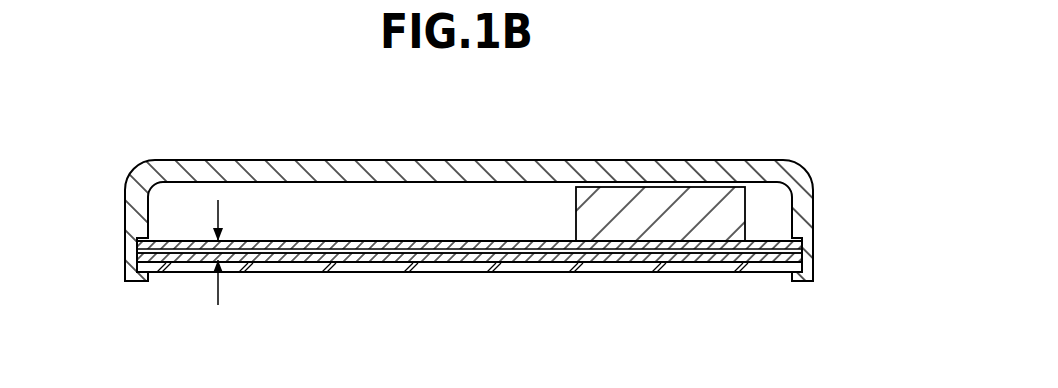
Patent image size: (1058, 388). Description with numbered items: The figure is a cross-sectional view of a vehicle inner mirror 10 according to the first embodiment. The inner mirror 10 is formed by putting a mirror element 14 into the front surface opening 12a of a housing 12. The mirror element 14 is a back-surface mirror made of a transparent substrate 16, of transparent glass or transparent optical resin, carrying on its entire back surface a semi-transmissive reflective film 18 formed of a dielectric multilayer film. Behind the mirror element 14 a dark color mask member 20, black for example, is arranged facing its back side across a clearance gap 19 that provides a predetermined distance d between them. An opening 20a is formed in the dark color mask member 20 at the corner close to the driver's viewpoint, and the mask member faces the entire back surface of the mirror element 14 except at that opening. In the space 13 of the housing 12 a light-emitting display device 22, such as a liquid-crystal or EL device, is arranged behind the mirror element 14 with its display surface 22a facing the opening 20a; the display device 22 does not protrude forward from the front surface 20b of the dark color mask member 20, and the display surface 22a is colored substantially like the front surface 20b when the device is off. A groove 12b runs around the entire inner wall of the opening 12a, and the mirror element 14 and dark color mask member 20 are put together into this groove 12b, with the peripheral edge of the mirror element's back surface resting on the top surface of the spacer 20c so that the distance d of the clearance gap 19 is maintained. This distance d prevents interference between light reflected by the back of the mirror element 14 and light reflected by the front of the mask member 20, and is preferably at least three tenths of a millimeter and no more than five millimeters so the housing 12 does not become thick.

The inner mirror 10 is at (738, 88).
The housing 12 is at (423, 160).
The front surface opening 12a is at (786, 279).
The groove 12b is at (137, 238).
The space 13 is at (515, 203).
The mirror element 14 is at (386, 287).
The transparent substrate 16 is at (342, 266).
The semi-transmissive reflective film 18 is at (292, 263).
The clearance gap 19 is at (260, 257).
The dark color mask member 20 is at (171, 251).
The opening 20a is at (742, 263).
The front surface 20b is at (445, 260).
The spacer 20c is at (137, 246).
The light-emitting display device 22 is at (657, 200).
The display surface 22a is at (642, 250).
The distance d is at (200, 256).